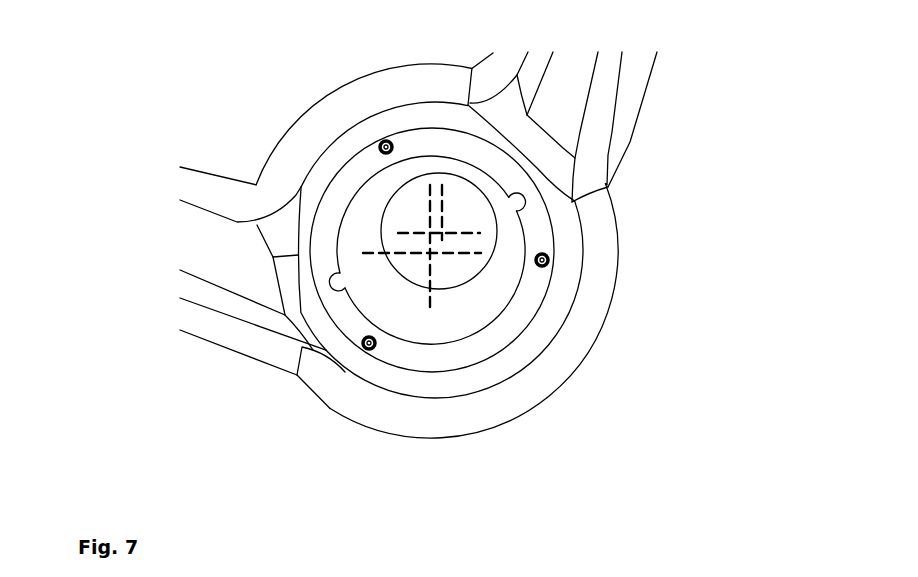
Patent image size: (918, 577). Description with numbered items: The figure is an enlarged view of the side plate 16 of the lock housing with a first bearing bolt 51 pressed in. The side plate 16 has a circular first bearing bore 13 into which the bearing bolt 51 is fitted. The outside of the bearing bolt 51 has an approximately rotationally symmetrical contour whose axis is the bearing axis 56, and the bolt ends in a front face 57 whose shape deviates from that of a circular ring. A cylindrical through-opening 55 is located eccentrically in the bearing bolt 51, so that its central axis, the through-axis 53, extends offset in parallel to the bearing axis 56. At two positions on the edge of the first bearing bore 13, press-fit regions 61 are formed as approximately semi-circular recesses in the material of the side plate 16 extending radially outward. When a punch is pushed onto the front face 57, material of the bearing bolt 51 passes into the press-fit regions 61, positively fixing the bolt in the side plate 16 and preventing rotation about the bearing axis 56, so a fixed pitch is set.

The first bearing bore 13 is at (390, 328).
The side plate 16 is at (555, 113).
The bearing bolt 51 is at (347, 252).
The through-axis 53 is at (440, 237).
The through-opening 55 is at (397, 213).
The bearing axis 56 is at (433, 255).
The front face 57 is at (443, 328).
The press-fit region 61 is at (514, 203).